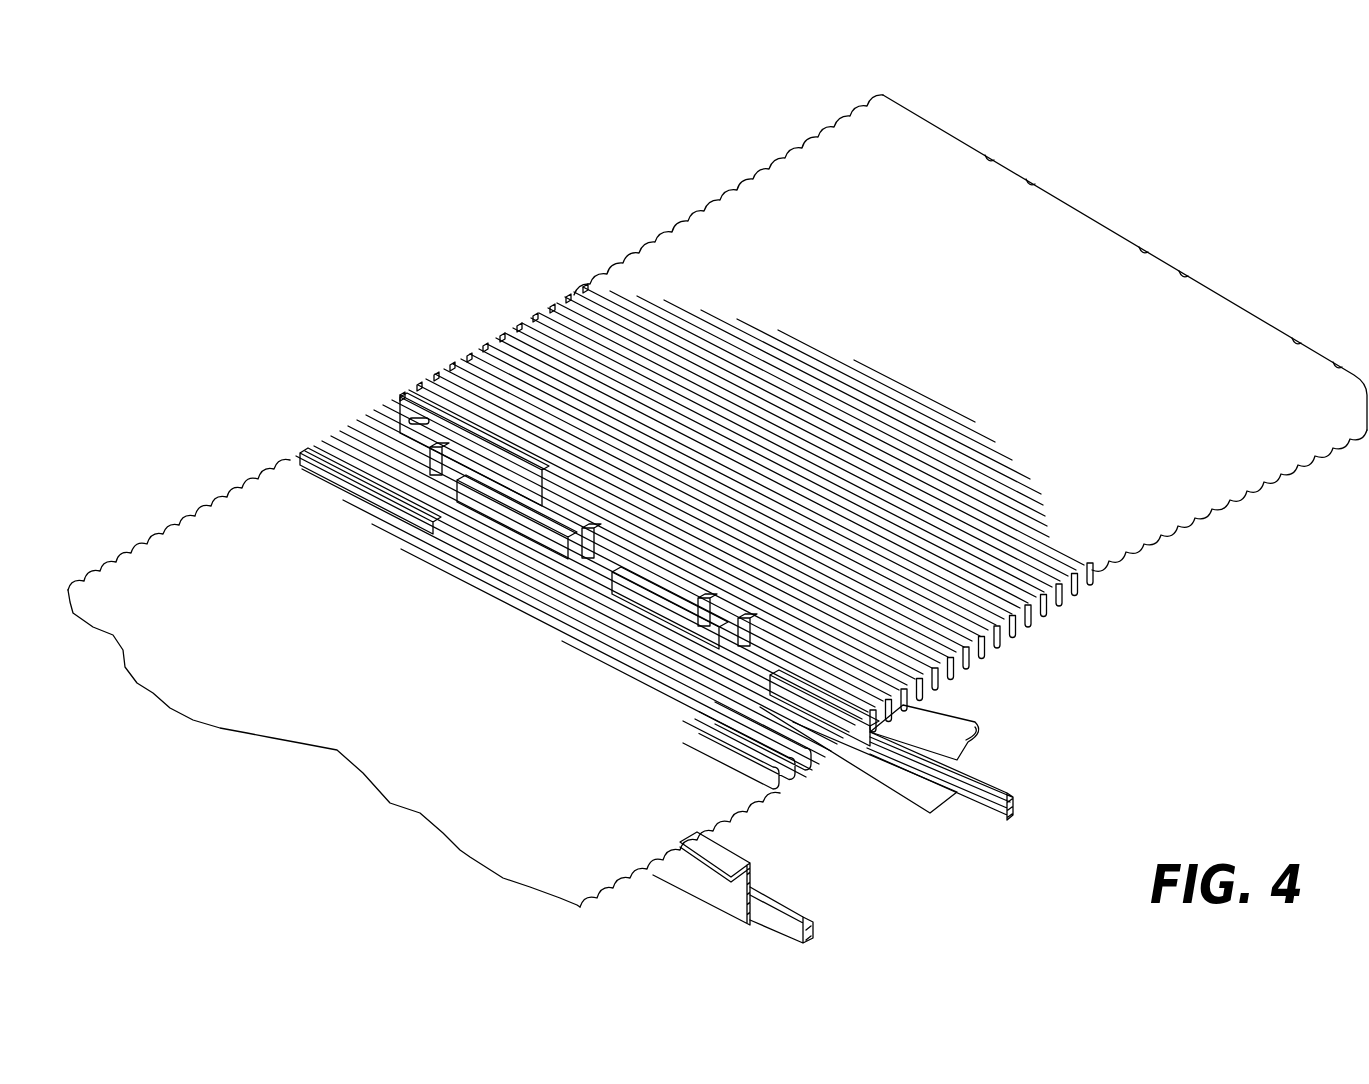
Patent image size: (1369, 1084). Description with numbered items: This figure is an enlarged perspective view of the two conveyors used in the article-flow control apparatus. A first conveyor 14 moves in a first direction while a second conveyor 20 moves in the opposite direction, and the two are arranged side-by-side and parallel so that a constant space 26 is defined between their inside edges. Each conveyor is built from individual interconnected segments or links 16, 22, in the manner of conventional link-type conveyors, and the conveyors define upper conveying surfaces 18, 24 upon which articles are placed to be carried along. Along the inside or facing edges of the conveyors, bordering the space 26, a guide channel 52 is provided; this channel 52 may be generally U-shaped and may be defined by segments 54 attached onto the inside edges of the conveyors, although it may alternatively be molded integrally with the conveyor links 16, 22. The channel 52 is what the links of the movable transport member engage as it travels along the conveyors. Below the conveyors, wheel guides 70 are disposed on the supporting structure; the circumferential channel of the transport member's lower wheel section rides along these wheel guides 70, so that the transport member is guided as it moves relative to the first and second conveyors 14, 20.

The first conveyor 14 is at (463, 794).
The links 16 is at (350, 482).
The upper conveying surface 18 is at (318, 710).
The second conveyor 20 is at (945, 131).
The links 22 is at (522, 380).
The upper conveying surface 24 is at (1042, 238).
The space 26 is at (398, 447).
The guide channel 52 is at (432, 460).
The segments 54 is at (547, 553).
The wheel guides 70 is at (983, 807).